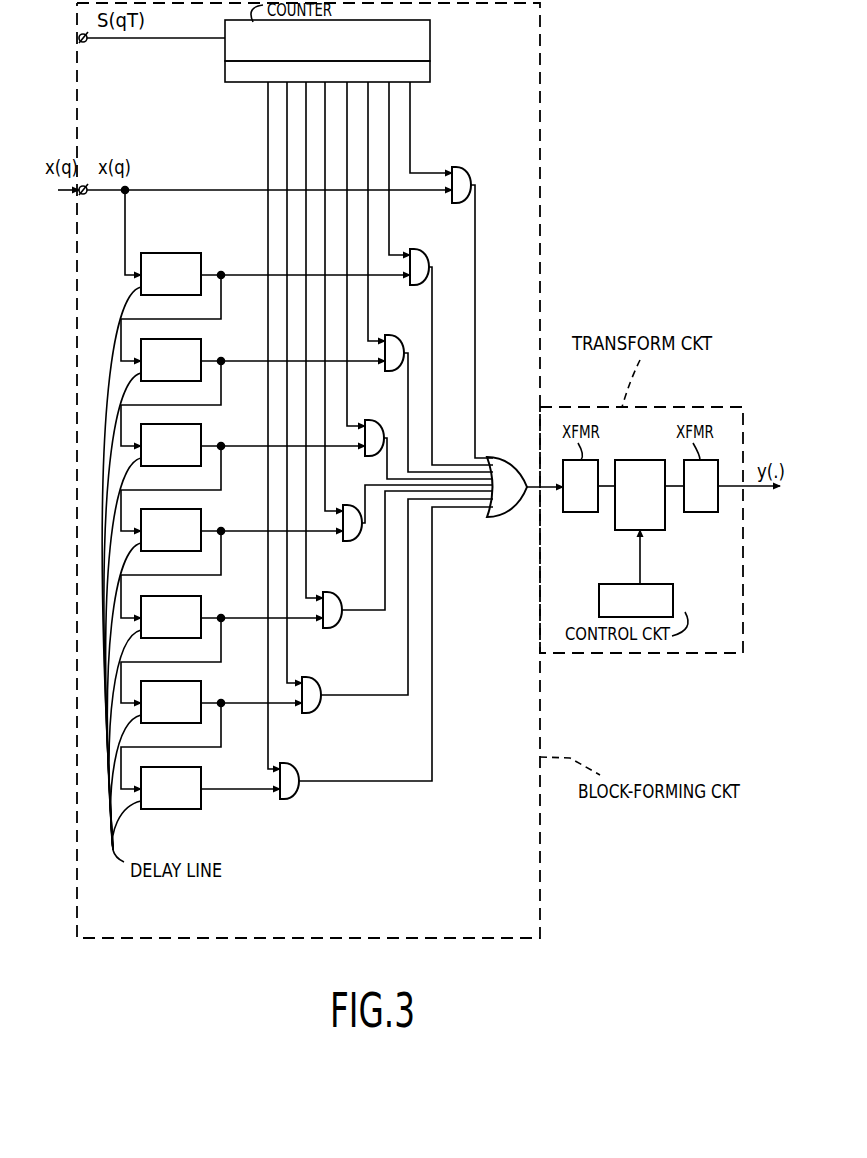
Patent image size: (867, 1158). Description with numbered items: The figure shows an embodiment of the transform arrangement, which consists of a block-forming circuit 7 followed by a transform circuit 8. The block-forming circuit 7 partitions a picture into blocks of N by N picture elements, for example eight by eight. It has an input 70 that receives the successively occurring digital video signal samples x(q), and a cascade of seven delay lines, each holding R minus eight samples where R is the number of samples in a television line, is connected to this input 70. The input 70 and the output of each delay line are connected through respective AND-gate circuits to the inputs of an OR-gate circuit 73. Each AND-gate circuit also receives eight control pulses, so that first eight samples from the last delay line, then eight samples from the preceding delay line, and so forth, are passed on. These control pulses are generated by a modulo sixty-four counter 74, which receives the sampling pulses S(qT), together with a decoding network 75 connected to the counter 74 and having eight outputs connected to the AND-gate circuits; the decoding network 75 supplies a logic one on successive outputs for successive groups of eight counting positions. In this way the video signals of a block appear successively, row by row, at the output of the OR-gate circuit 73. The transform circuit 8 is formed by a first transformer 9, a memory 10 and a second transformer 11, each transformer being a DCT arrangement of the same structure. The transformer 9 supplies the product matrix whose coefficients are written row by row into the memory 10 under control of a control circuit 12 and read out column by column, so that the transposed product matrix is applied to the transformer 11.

The block-forming circuit 7 is at (178, 942).
The transform circuit 8 is at (648, 655).
The first transformer 9 is at (582, 512).
The memory 10 is at (648, 460).
The second transformer 11 is at (702, 512).
The control circuit 12 is at (673, 601).
The input 70 is at (95, 201).
The OR-gate circuit 73 is at (505, 457).
The modulo-64 counter 74 is at (430, 46).
The decoding network 75 is at (225, 72).